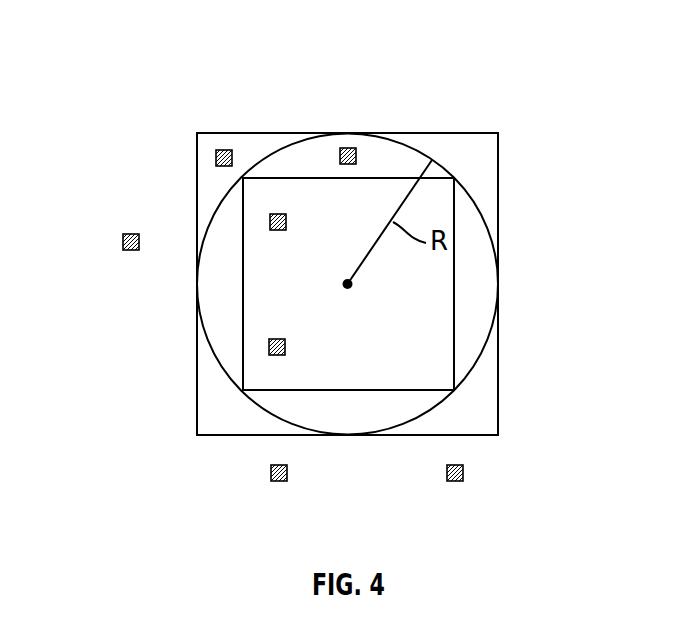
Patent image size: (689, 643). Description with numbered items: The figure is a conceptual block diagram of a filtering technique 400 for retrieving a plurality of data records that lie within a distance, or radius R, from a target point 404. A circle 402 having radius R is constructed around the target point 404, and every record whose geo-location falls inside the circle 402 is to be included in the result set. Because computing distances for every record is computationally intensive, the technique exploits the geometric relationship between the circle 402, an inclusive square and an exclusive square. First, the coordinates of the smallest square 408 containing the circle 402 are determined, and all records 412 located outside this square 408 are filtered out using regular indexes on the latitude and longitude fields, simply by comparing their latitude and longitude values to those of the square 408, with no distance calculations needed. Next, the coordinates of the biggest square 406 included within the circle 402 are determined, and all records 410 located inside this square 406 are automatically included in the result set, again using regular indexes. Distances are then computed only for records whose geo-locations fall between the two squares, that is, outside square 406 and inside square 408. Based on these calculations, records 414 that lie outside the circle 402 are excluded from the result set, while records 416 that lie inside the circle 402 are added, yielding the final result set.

The filtering technique 400 is at (190, 71).
The circle 402 is at (483, 213).
The target point 404 is at (349, 289).
The biggest square included within the circle 406 is at (455, 296).
The smallest square containing the circle 408 is at (458, 133).
The records located inside the biggest square 410 is at (288, 222).
The records located outside the smallest square 412 is at (128, 251).
The records which lie outside the circle 414 is at (216, 153).
The records which lie inside the circle 416 is at (348, 147).